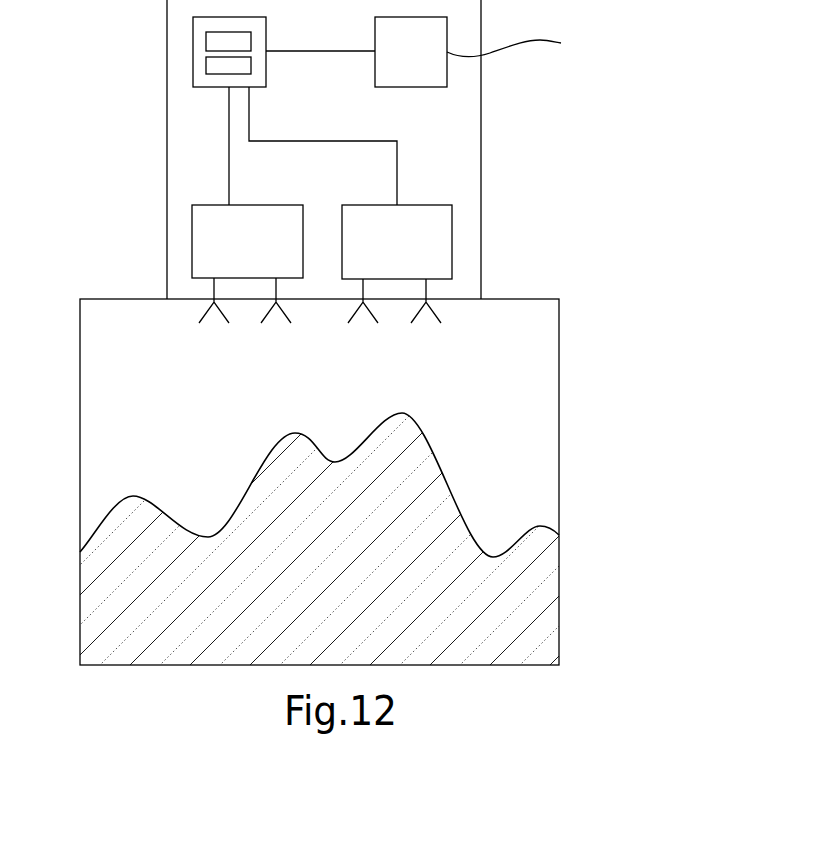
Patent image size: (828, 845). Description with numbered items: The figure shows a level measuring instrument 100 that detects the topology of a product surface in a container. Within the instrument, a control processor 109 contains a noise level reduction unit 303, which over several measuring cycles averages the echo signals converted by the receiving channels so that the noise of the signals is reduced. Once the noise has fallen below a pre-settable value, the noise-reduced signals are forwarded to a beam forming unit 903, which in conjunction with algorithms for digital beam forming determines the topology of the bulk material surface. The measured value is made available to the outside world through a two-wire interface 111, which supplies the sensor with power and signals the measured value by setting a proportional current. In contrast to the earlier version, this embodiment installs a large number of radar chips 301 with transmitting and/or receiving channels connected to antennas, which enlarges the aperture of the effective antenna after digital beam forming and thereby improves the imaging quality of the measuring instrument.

The level measuring instrument 100 is at (565, 177).
The control processor 109 is at (193, 52).
The beam forming unit 903 is at (206, 33).
The noise level reduction unit 303 is at (206, 68).
The two-wire interface 111 is at (528, 42).
The radar chip 301 is at (192, 242).